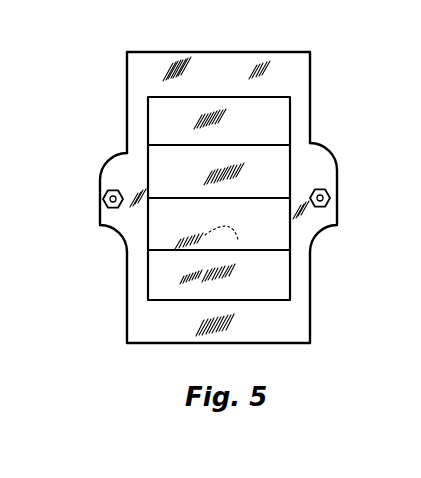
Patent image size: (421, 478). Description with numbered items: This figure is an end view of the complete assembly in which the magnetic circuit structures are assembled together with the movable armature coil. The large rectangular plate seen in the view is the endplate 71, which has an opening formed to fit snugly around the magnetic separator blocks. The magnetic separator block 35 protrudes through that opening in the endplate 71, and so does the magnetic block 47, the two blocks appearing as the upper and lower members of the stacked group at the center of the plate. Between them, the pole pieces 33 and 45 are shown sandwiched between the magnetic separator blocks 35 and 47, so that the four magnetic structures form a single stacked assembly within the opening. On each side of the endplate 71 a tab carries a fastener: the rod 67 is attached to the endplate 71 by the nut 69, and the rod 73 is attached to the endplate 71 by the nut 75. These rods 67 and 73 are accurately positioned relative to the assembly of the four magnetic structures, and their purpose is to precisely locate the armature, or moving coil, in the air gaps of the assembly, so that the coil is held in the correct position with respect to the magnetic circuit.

The endplate 71 is at (275, 62).
The magnetic separator block 35 is at (158, 112).
The pole piece 33 is at (272, 165).
The pole piece 45 is at (160, 235).
The magnetic block 47 is at (160, 284).
The nut 69 is at (108, 201).
The rod 67 is at (331, 199).
The nut 75 is at (112, 224).
The rod 73 is at (320, 186).